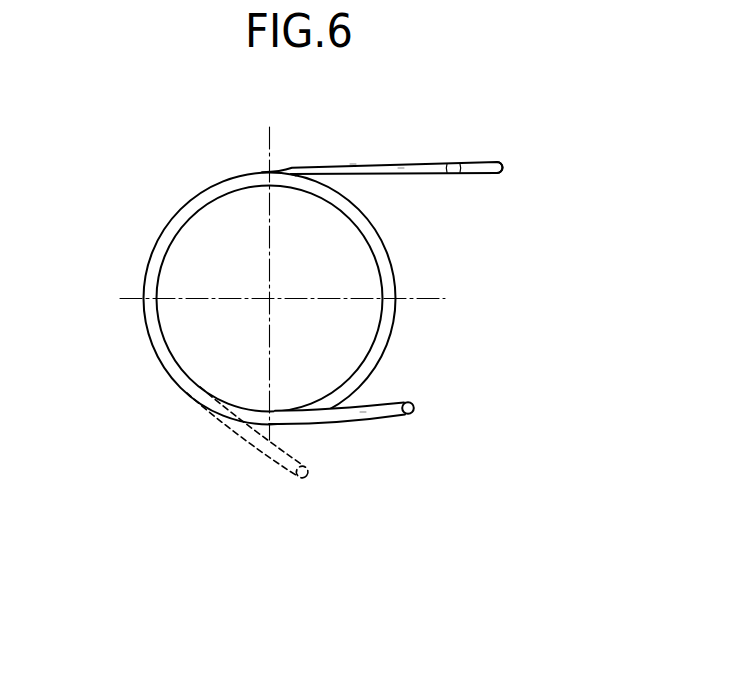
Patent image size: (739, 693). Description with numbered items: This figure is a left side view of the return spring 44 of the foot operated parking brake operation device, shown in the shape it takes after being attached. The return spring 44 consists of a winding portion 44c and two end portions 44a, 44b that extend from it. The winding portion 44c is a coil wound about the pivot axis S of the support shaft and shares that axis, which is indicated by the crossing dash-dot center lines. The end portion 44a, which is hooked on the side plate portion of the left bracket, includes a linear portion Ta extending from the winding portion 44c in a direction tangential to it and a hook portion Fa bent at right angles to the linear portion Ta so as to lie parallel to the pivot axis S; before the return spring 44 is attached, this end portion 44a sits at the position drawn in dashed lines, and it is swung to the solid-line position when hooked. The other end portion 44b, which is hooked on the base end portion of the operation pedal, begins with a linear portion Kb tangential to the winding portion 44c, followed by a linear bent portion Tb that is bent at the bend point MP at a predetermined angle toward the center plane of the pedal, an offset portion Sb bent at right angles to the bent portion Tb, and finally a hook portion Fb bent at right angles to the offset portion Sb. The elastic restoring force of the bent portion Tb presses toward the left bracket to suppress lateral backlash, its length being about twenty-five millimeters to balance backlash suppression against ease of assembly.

The return spring 44 is at (308, 304).
The end portion 44a is at (313, 413).
The end portion 44b is at (408, 170).
The winding portion 44c is at (388, 255).
The pivot axis S is at (271, 297).
The bend point MP is at (353, 160).
The linear portion Kb is at (324, 171).
The bent portion Tb is at (401, 169).
The offset portion Sb is at (455, 163).
The hook portion Fb is at (485, 173).
The hook portion Fa is at (415, 407).
The linear portion Ta is at (365, 418).